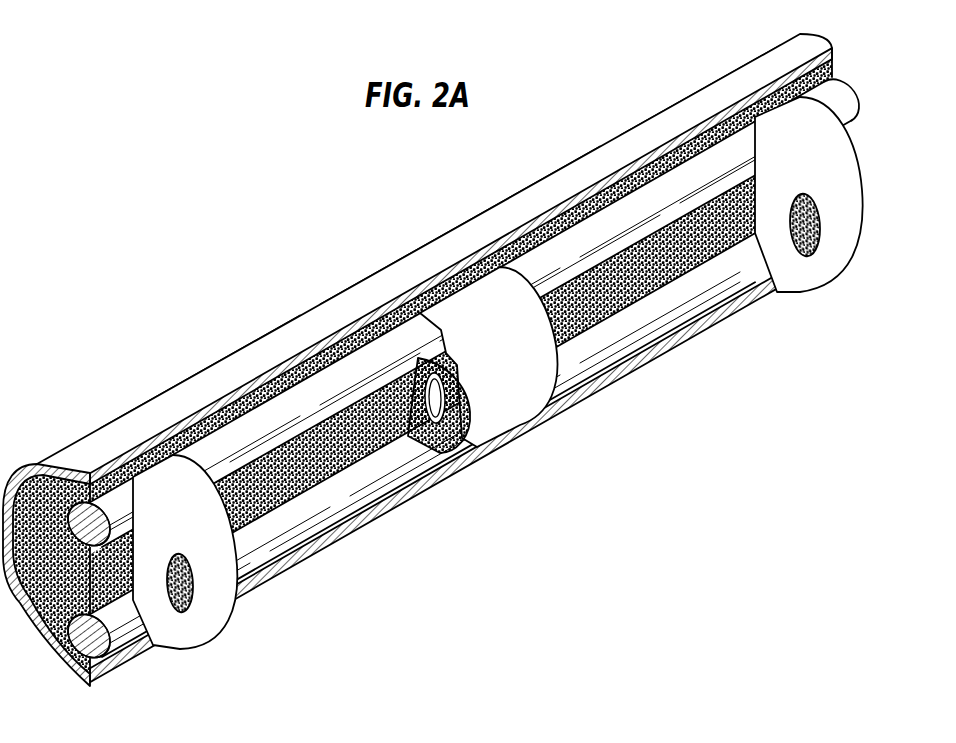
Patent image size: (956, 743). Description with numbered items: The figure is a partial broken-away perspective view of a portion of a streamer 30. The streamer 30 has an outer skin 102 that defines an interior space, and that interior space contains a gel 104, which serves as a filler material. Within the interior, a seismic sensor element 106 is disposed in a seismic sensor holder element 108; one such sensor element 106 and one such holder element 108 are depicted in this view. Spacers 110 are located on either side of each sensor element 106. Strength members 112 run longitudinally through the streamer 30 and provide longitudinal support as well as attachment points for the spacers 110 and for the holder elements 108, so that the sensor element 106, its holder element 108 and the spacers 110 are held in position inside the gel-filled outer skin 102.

The streamer 30 is at (214, 328).
The outer skin 102 is at (428, 253).
The gel 104 is at (290, 485).
The seismic sensor element 106 is at (424, 405).
The seismic sensor holder element 108 is at (500, 417).
The spacer 110 is at (838, 248).
The strength member 112 is at (666, 321).